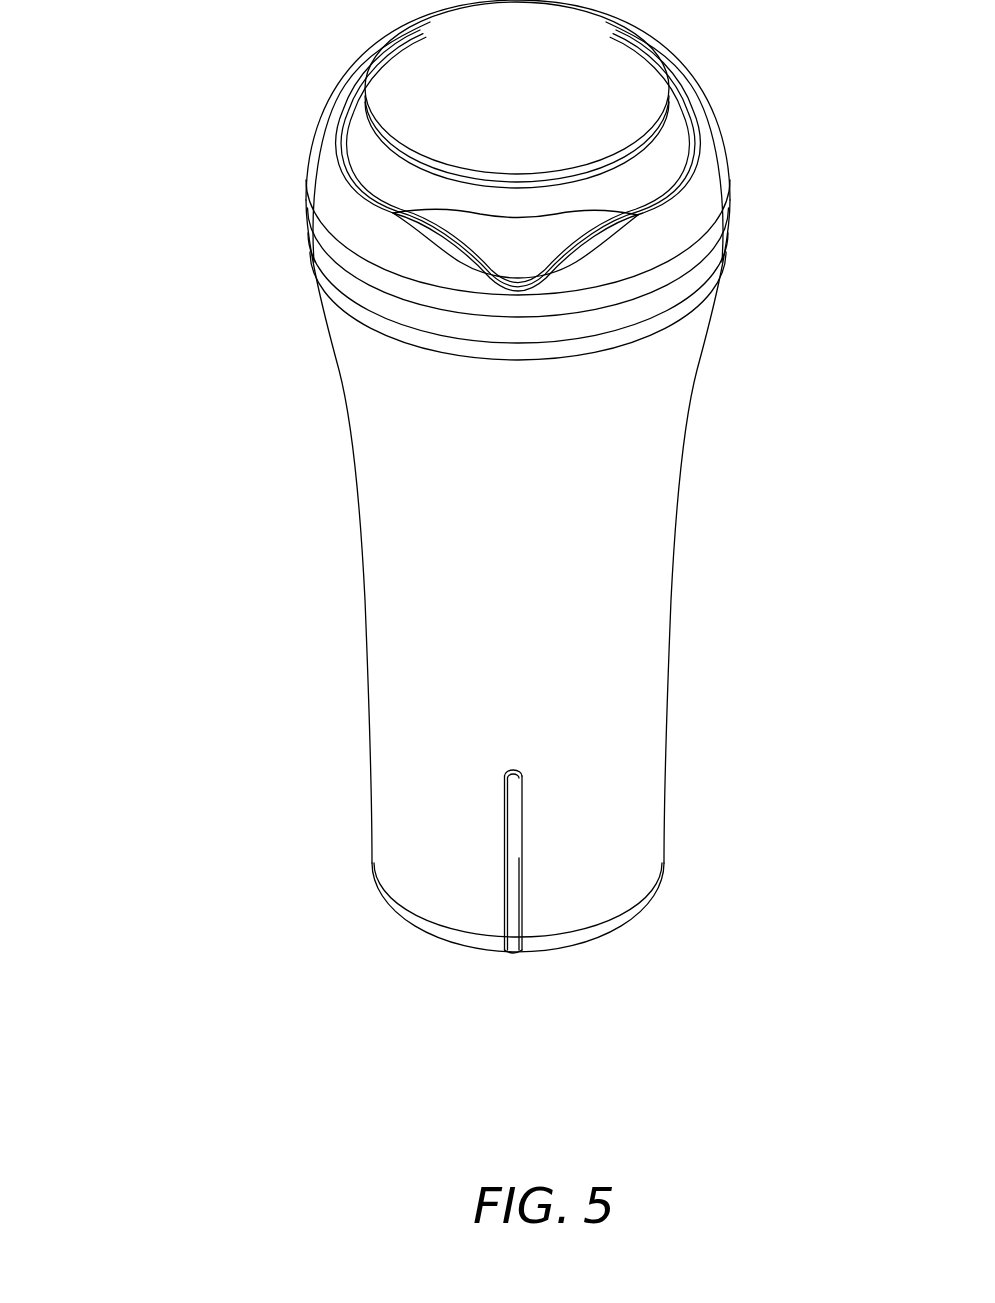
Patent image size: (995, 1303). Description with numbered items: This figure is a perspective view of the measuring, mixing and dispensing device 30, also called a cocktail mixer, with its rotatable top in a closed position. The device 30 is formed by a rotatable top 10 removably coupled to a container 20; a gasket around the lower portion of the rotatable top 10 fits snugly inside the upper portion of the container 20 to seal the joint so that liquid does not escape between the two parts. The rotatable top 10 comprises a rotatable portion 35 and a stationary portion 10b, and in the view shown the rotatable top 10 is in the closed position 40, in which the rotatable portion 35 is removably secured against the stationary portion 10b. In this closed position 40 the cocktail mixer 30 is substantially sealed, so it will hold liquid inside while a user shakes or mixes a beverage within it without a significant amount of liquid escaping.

The rotatable top 10 is at (718, 202).
The stationary portion 10b is at (708, 175).
The container 20 is at (683, 452).
The measuring, mixing and dispensing device 30 is at (193, 222).
The rotatable portion 35 is at (682, 128).
The closed position 40 is at (383, 185).